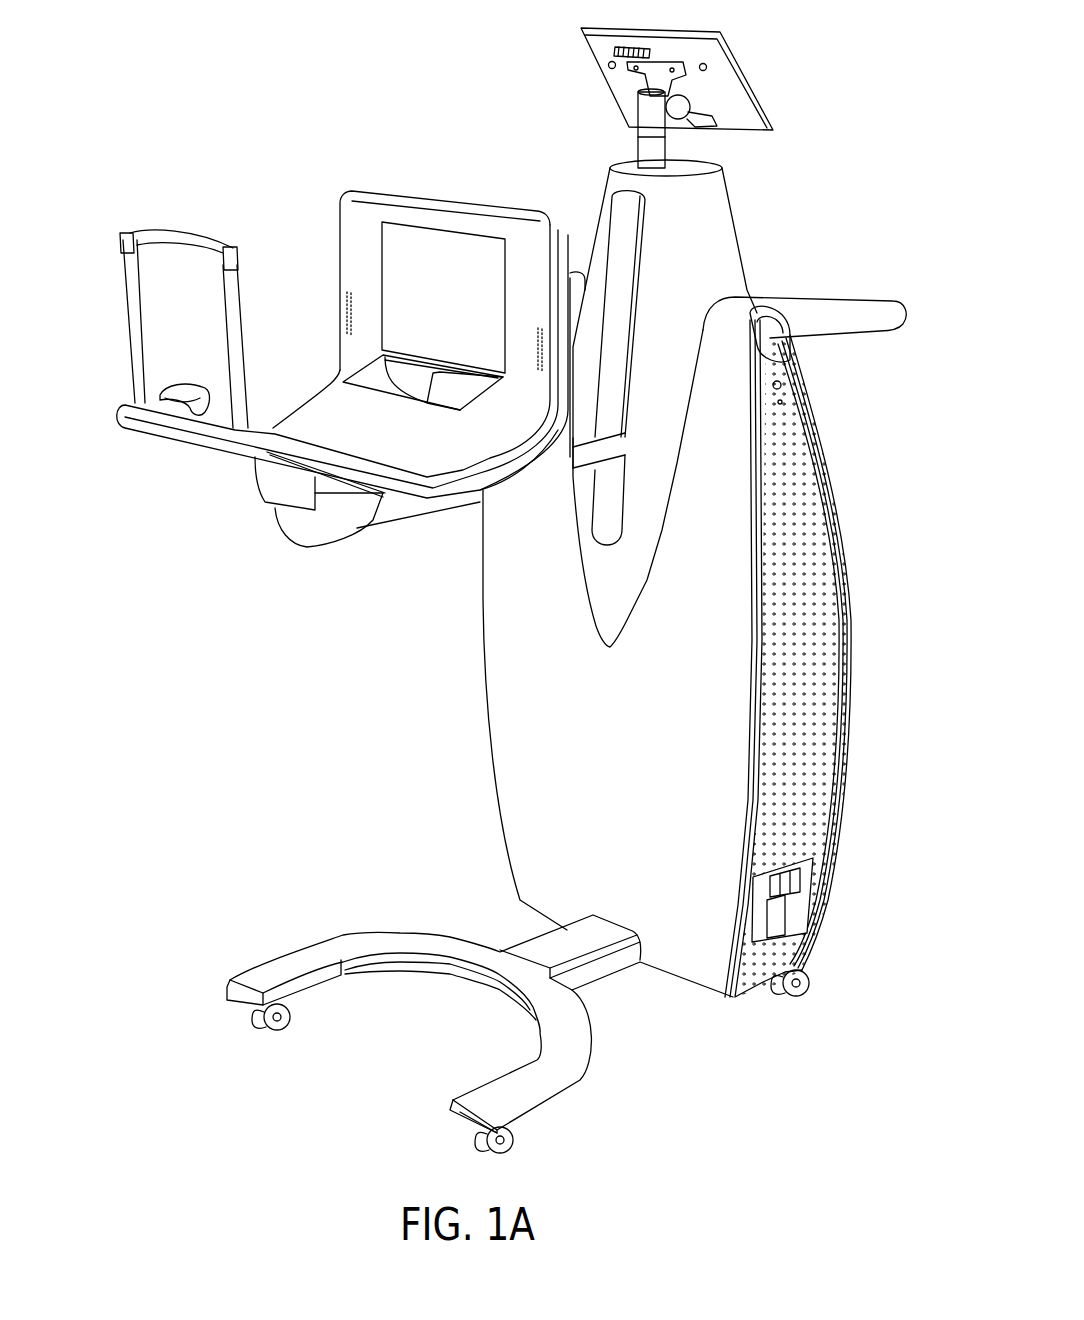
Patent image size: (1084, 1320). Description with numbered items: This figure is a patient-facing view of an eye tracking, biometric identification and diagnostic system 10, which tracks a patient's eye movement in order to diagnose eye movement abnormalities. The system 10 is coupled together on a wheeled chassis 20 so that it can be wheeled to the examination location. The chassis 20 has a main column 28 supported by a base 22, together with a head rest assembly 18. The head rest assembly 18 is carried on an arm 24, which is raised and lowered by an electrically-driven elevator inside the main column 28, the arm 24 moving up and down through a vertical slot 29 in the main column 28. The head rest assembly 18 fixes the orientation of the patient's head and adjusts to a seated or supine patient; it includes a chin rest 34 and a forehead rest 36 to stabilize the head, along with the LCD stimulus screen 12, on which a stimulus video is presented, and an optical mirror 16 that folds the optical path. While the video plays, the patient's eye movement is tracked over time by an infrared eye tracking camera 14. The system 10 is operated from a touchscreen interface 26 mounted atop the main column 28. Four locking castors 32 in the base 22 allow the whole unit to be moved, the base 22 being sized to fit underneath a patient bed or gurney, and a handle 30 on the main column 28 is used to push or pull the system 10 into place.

The eye tracking, biometric identification and diagnostic system 10 is at (183, 65).
The LCD stimulus screen 12 is at (380, 195).
The infrared eye tracking camera 14 is at (390, 390).
The optical mirror 16 is at (387, 392).
The head rest assembly 18 is at (172, 442).
The wheeled chassis 20 is at (483, 703).
The base 22 is at (598, 1038).
The arm 24 is at (420, 517).
The touchscreen interface 26 is at (753, 80).
The main column 28 is at (835, 620).
The vertical slot 29 is at (640, 260).
The handle 30 is at (875, 333).
The locking castors 32 is at (292, 1013).
The chin rest 34 is at (153, 393).
The forehead rest 36 is at (167, 230).